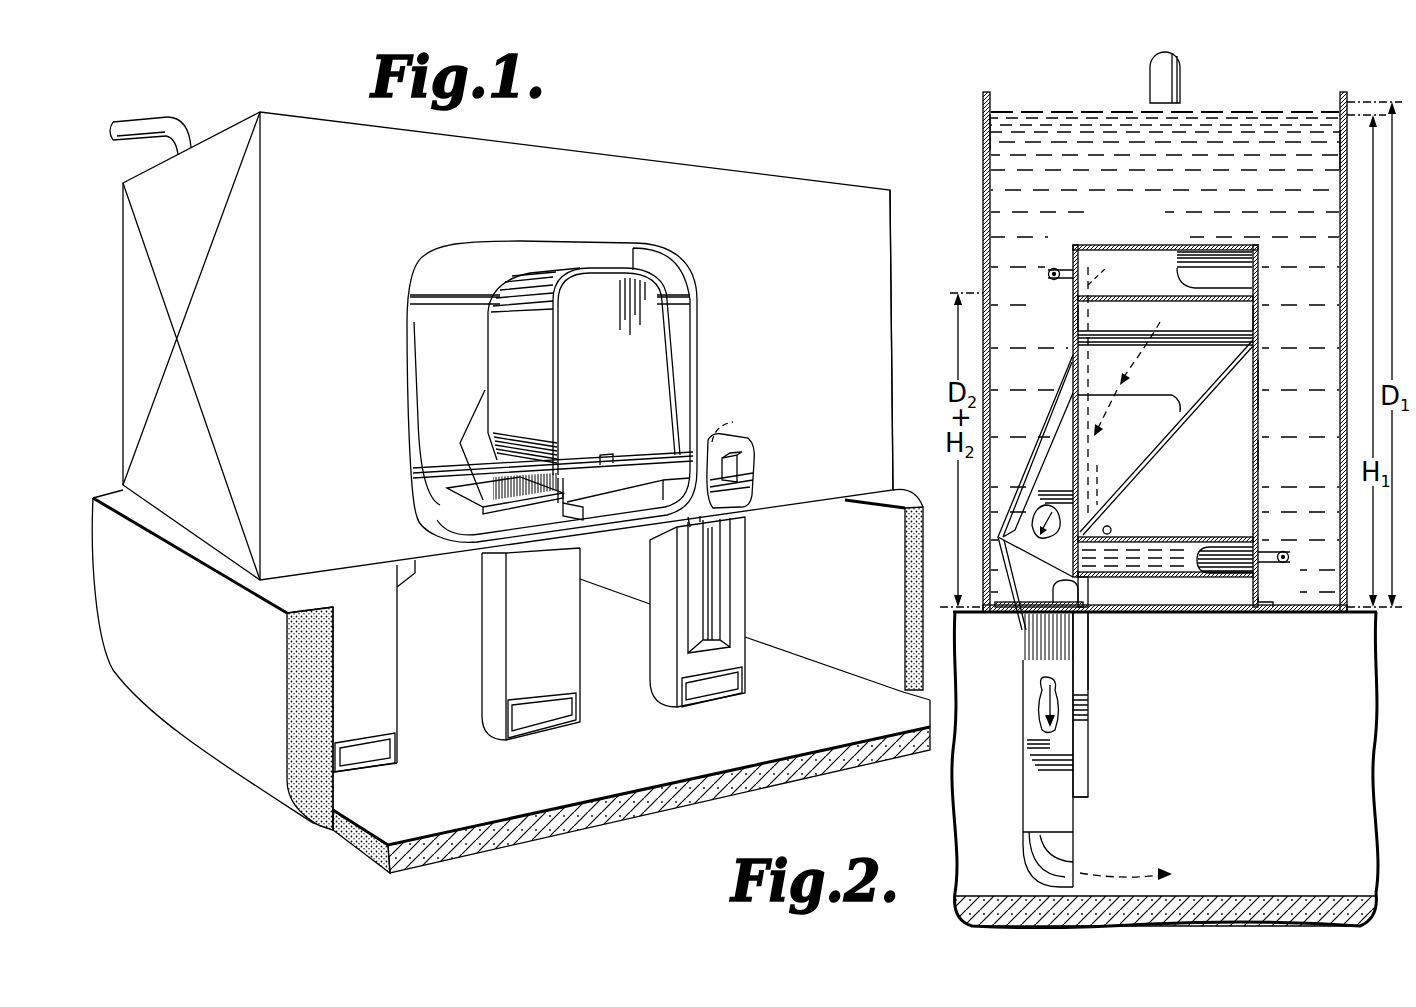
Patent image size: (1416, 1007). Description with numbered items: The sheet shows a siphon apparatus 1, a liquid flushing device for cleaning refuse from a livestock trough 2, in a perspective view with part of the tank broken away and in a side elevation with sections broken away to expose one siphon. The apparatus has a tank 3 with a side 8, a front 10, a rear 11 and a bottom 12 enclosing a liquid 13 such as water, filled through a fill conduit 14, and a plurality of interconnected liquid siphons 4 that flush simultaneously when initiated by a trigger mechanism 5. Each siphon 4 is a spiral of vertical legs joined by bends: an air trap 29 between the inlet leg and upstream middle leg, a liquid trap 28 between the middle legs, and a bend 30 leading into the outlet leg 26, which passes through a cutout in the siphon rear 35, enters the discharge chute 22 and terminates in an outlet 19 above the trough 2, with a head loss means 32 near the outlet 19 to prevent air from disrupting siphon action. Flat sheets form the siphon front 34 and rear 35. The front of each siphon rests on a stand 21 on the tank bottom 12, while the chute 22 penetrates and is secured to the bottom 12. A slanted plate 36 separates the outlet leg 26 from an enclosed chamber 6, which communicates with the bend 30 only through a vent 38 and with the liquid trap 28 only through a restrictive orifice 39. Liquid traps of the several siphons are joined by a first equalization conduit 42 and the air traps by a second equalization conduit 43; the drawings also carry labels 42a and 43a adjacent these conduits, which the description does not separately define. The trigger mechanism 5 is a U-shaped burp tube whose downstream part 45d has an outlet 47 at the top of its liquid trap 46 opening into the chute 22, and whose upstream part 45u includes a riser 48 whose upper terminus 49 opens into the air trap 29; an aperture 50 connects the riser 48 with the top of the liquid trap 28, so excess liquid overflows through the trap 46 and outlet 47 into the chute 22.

In FIG. 1, the siphon apparatus 1 is at (262, 114).
In FIG. 2, the siphon apparatus 1 is at (1094, 238).
In FIG. 1, the trough 2 is at (612, 713).
In FIG. 2, the trough 2 is at (1180, 906).
In FIG. 1, the tank 3 is at (717, 182).
In FIG. 2, the tank 3 is at (1348, 296).
In FIG. 1, the liquid siphon 4 is at (582, 268).
In FIG. 2, the liquid siphon 4 is at (1258, 282).
In FIG. 1, the trigger mechanism 5 is at (725, 576).
In FIG. 2, the trigger mechanism 5 is at (1089, 668).
In FIG. 2, the chamber 6 is at (1258, 456).
In FIG. 1, the tank side 8 is at (124, 341).
In FIG. 1, the tank front 10 is at (886, 388).
In FIG. 2, the tank front 10 is at (1347, 146).
In FIG. 2, the tank rear 11 is at (983, 131).
In FIG. 1, the tank bottom 12 is at (752, 493).
In FIG. 2, the liquid 13 is at (1164, 205).
In FIG. 1, the fill conduit 14 is at (155, 128).
In FIG. 2, the fill conduit 14 is at (1181, 68).
In FIG. 1, the outlet 19 is at (372, 752).
In FIG. 1, the stand 21 is at (562, 515).
In FIG. 2, the stand 21 is at (1265, 603).
In FIG. 1, the discharge chute 22 is at (396, 694).
In FIG. 2, the discharge chute 22 is at (1023, 708).
In FIG. 2, the outlet leg 26 is at (1190, 418).
In FIG. 2, the liquid trap 28 is at (1182, 568).
In FIG. 2, the air trap 29 is at (1142, 258).
In FIG. 2, the bend 30 is at (1258, 322).
In FIG. 2, the head loss means 32 is at (1073, 858).
In FIG. 2, the siphon front 34 is at (1259, 386).
In FIG. 2, the siphon rear 35 is at (1073, 312).
In FIG. 2, the slanted plate 36 is at (1205, 398).
In FIG. 2, the vent 38 is at (1228, 332).
In FIG. 2, the restrictive orifice 39 is at (1112, 528).
In FIG. 2, the first equalization conduit 42 is at (1283, 551).
In FIG. 1, the bar 42a is at (631, 464).
In FIG. 2, the second equalization conduit 43 is at (1048, 270).
In FIG. 1, the support bar 43a is at (488, 300).
In FIG. 1, the downstream part of conduit 45d is at (748, 470).
In FIG. 2, the downstream part of conduit 45d is at (1089, 636).
In FIG. 1, the upstream part of conduit 45u is at (700, 582).
In FIG. 2, the upstream part of conduit 45u is at (1085, 580).
In FIG. 2, the liquid trap 46 is at (1084, 798).
In FIG. 1, the outlet 47 is at (741, 424).
In FIG. 2, the outlet 47 is at (1057, 592).
In FIG. 2, the riser 48 is at (1182, 274).
In FIG. 2, the upper terminus 49 is at (1107, 381).
In FIG. 2, the aperture 50 is at (1103, 462).